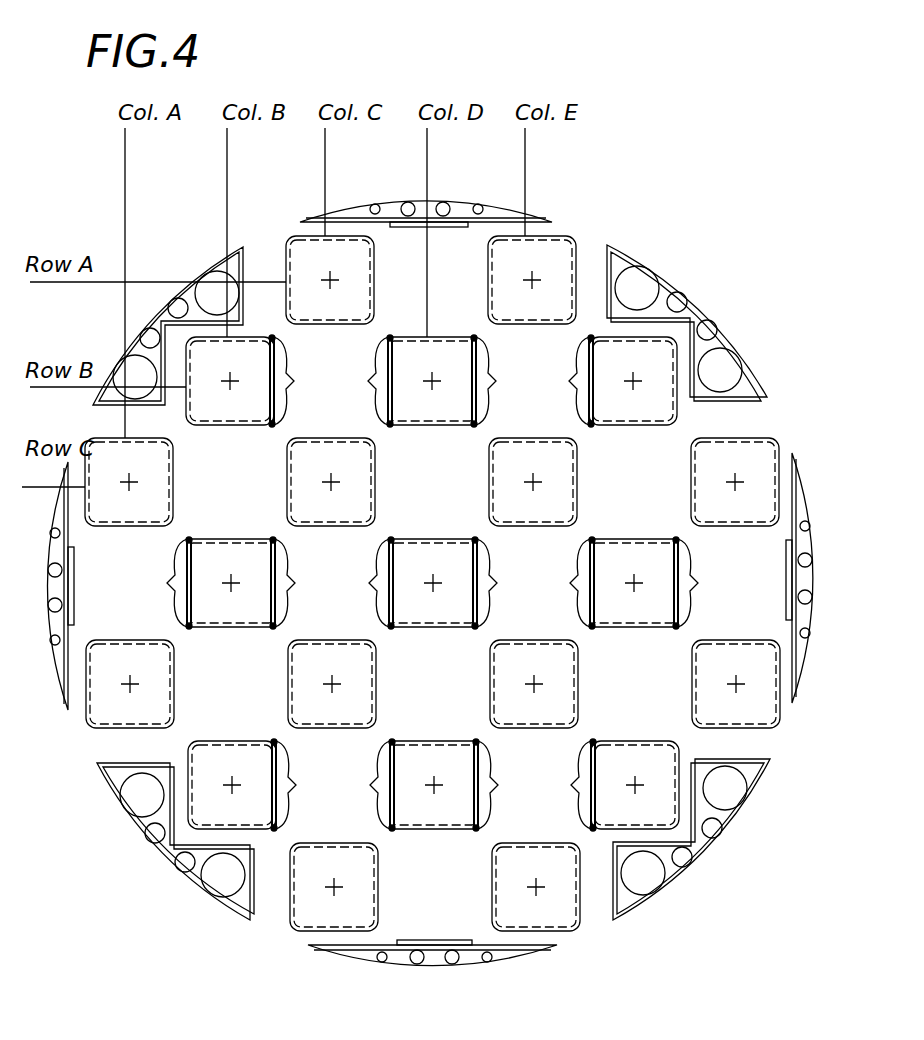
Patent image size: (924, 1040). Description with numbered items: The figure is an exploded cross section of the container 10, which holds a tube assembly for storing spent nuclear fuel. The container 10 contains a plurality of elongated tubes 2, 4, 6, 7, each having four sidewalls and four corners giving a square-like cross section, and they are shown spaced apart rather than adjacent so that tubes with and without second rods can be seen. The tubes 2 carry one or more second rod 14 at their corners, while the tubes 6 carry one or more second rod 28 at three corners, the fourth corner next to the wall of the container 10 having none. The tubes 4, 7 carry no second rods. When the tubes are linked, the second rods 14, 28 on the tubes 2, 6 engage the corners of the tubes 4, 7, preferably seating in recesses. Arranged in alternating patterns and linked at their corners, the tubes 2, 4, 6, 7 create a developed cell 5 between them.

The container 10 is at (655, 188).
The tube 2 is at (423, 417).
The tube 4 is at (322, 518).
The developed cell 5 is at (431, 580).
The tube 6 is at (221, 417).
The tube 7 is at (321, 316).
The second rod 14 is at (433, 583).
The second rod 28 is at (431, 583).